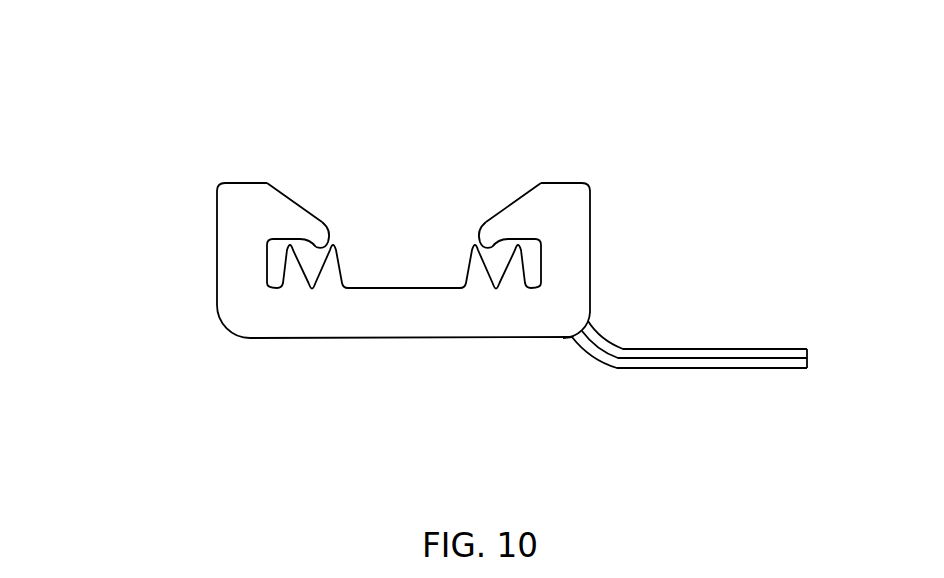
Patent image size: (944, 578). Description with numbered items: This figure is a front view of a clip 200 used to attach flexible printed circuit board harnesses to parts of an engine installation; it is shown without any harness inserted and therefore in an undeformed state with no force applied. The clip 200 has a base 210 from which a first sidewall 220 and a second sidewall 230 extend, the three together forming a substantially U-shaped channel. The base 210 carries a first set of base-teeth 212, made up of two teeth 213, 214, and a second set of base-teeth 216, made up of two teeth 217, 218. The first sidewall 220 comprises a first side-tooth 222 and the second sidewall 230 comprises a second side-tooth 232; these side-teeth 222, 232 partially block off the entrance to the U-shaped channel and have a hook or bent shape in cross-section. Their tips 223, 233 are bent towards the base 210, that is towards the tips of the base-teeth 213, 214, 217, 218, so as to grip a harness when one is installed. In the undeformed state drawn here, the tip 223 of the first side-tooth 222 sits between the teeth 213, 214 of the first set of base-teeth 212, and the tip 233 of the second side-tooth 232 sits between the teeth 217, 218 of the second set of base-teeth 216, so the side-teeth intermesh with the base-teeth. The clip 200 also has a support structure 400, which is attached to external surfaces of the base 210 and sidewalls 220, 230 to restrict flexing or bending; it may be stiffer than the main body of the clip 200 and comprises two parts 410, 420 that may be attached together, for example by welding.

The clip 200 is at (166, 170).
The base 210 is at (392, 323).
The first set of base-teeth 212 is at (592, 403).
The tooth 213 is at (472, 285).
The tooth 214 is at (510, 285).
The second set of base-teeth 216 is at (355, 418).
The tooth 217 is at (294, 286).
The tooth 218 is at (332, 285).
The first sidewall 220 is at (583, 275).
The first side-tooth 222 is at (532, 207).
The tip of first side-tooth 223 is at (497, 225).
The second sidewall 230 is at (233, 237).
The second side-tooth 232 is at (283, 212).
The tip of second side-tooth 233 is at (315, 227).
The support structure 400 is at (832, 432).
The part of support structure 410 is at (705, 352).
The part of support structure 420 is at (772, 363).